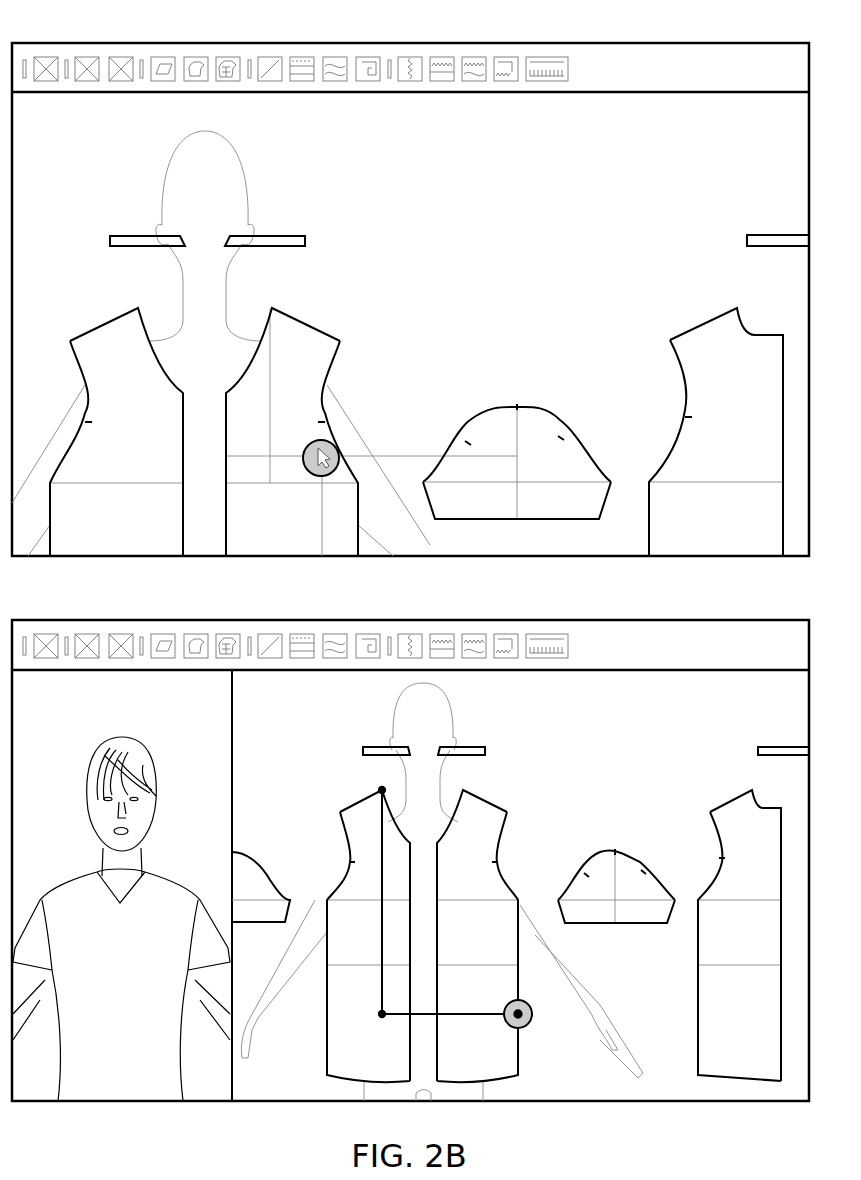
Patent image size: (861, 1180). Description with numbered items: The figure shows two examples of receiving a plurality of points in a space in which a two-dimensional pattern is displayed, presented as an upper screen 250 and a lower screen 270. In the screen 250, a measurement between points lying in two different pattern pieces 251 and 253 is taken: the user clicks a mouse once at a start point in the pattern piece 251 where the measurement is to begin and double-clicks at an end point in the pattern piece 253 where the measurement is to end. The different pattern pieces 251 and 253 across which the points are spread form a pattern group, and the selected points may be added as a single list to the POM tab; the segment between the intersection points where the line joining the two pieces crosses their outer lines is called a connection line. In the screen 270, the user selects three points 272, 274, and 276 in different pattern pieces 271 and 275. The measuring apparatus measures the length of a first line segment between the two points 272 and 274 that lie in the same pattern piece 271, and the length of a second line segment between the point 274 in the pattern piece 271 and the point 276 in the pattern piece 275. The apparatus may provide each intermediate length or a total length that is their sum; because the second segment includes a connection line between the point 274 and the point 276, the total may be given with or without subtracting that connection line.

The screen 250 is at (122, 43).
The pattern piece 251 is at (340, 341).
The pattern piece 253 is at (557, 424).
The screen 270 is at (122, 620).
The pattern piece 271 is at (348, 806).
The point 272 is at (382, 790).
The point 274 is at (382, 1014).
The pattern piece 275 is at (507, 886).
The point 276 is at (530, 1021).